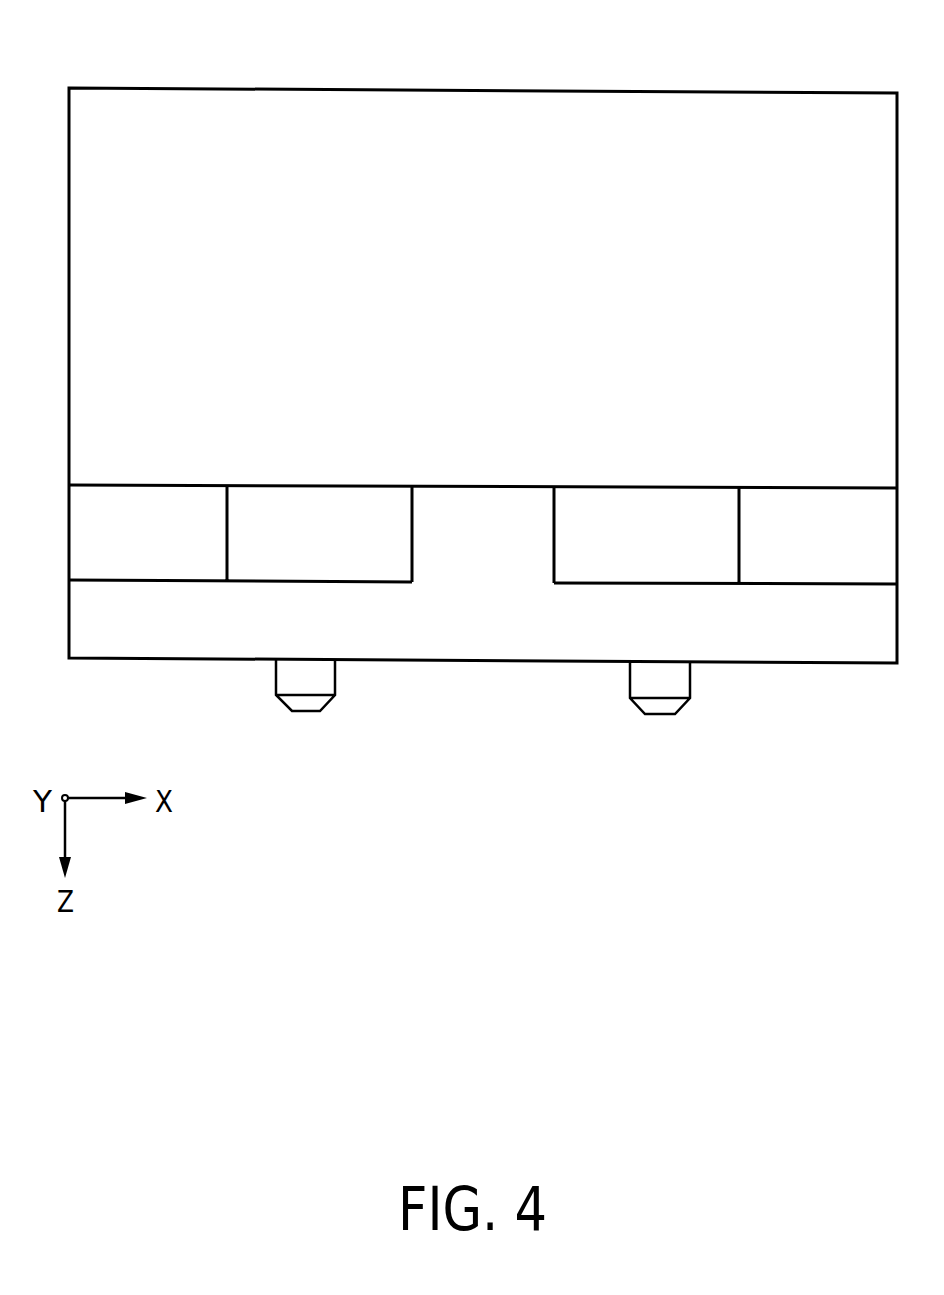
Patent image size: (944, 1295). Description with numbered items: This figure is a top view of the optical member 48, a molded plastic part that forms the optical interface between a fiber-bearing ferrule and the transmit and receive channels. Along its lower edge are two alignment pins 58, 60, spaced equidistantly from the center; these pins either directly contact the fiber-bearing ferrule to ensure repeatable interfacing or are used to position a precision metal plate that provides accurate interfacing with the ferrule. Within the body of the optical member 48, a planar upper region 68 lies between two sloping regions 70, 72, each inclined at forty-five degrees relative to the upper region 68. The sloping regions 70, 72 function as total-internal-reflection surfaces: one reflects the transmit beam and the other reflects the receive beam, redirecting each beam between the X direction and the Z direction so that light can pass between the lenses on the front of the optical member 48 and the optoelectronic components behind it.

The optical member 48 is at (770, 48).
The alignment pin 58 is at (312, 707).
The alignment pin 60 is at (665, 712).
The planar upper region 68 is at (465, 497).
The sloping region 70 is at (267, 497).
The sloping region 72 is at (700, 498).